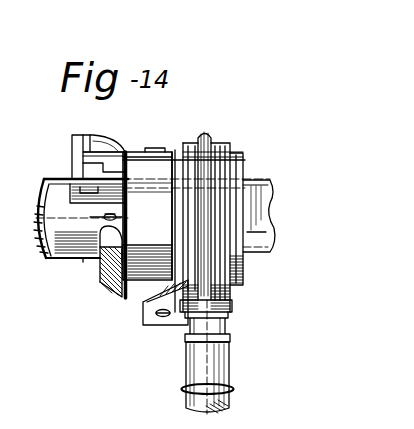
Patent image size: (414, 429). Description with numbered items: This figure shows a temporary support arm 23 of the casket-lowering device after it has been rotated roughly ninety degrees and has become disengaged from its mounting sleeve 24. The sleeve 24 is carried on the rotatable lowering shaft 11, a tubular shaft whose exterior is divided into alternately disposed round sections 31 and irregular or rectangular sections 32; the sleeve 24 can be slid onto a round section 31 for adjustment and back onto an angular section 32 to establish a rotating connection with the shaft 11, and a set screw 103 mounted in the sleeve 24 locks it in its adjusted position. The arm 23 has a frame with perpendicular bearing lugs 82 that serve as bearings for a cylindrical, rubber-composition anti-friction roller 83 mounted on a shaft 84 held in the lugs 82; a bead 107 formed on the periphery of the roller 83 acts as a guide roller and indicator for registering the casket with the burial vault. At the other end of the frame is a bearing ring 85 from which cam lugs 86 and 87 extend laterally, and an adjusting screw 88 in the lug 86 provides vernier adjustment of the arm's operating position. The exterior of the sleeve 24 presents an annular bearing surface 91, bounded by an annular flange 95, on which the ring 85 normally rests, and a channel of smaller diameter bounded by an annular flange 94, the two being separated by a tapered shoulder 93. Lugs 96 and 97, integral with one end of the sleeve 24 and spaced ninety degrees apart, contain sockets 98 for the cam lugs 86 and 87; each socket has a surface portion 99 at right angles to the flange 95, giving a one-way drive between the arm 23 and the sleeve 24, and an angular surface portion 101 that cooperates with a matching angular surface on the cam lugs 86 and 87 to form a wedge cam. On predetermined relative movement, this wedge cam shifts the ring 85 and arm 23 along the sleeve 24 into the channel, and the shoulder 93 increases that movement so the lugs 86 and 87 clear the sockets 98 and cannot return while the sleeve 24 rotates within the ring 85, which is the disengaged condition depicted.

The rotatable lowering shaft 11 is at (278, 195).
The temporary support arm 23 is at (232, 135).
The mounting sleeve 24 is at (131, 143).
The round section 31 is at (44, 196).
The rectangular section 32 is at (269, 231).
The bearing lug 82 is at (226, 326).
The anti-friction roller 83 is at (230, 351).
The shaft 84 is at (212, 407).
The bearing ring 85 is at (206, 130).
The cam lug 86 is at (143, 305).
The cam lug 87 is at (160, 141).
The adjusting screw 88 is at (157, 315).
The annular bearing surface 91 is at (167, 227).
The tapered shoulder 93 is at (176, 202).
The annular flange 94 is at (238, 158).
The annular flange 95 is at (120, 242).
The lug 96 is at (76, 153).
The lug 97 is at (113, 295).
The socket 98 is at (92, 138).
The surface portion 99 is at (83, 164).
The angular surface portion 101 is at (108, 141).
The set screw 103 is at (90, 217).
The bead 107 is at (233, 388).